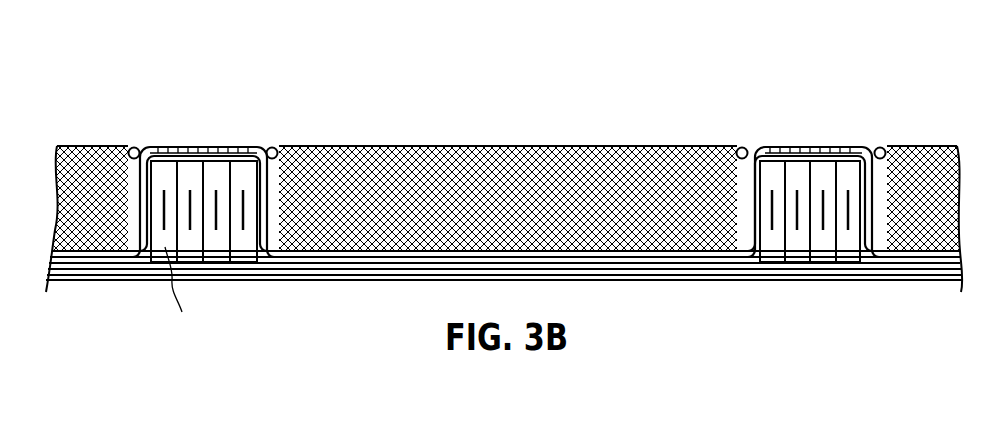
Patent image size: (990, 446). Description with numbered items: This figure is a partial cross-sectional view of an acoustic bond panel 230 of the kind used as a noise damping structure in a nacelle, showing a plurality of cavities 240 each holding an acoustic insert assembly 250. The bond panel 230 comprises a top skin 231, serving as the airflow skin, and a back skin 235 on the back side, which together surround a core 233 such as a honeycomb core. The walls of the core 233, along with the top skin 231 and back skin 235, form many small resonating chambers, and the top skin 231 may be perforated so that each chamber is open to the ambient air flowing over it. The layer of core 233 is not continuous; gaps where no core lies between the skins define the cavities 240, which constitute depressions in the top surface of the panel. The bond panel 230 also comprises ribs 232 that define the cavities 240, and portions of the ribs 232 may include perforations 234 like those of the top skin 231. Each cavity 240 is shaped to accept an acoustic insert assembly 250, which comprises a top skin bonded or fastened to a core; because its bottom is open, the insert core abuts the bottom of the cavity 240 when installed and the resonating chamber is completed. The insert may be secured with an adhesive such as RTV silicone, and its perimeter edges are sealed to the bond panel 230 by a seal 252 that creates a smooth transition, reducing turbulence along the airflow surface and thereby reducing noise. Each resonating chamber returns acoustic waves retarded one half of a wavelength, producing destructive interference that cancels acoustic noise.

The bond panel 230 is at (351, 280).
The top skin 231 is at (612, 253).
The ribs 232 is at (177, 147).
The core 233 is at (823, 250).
The perforations 234 is at (242, 147).
The back skin 235 is at (678, 278).
The cavities 240 is at (270, 197).
The acoustic insert assembly 250 is at (74, 147).
The seal 252 is at (133, 147).